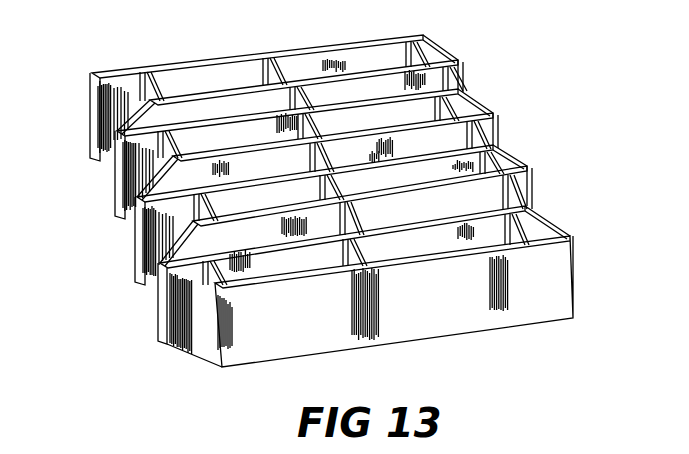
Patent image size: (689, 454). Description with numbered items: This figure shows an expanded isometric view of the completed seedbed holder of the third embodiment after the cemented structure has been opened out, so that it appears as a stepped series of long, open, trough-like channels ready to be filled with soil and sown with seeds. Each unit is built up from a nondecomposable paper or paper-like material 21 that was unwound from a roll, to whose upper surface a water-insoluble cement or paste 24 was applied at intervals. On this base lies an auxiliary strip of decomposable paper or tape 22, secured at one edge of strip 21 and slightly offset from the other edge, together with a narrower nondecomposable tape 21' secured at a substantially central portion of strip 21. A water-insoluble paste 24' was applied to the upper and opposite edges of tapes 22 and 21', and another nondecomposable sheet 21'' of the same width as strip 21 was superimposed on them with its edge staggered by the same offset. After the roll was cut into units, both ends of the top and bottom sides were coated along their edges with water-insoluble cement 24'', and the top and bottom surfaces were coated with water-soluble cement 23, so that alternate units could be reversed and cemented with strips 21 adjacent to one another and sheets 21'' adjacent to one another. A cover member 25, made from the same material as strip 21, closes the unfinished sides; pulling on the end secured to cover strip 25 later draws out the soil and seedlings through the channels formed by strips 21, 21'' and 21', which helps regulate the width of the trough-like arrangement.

The nondecomposable paper strip 21 is at (379, 203).
The narrower nondecomposable tape 21' is at (334, 167).
The second nondecomposable paper sheet 21'' is at (108, 178).
The decomposable auxiliary paper tape 22 is at (463, 100).
The water-soluble cement 23 is at (198, 62).
The water-insoluble cement 24 is at (308, 138).
The water-insoluble paste on tapes 24' is at (513, 136).
The edge cement 24'' is at (91, 178).
The cover member 25 is at (250, 53).